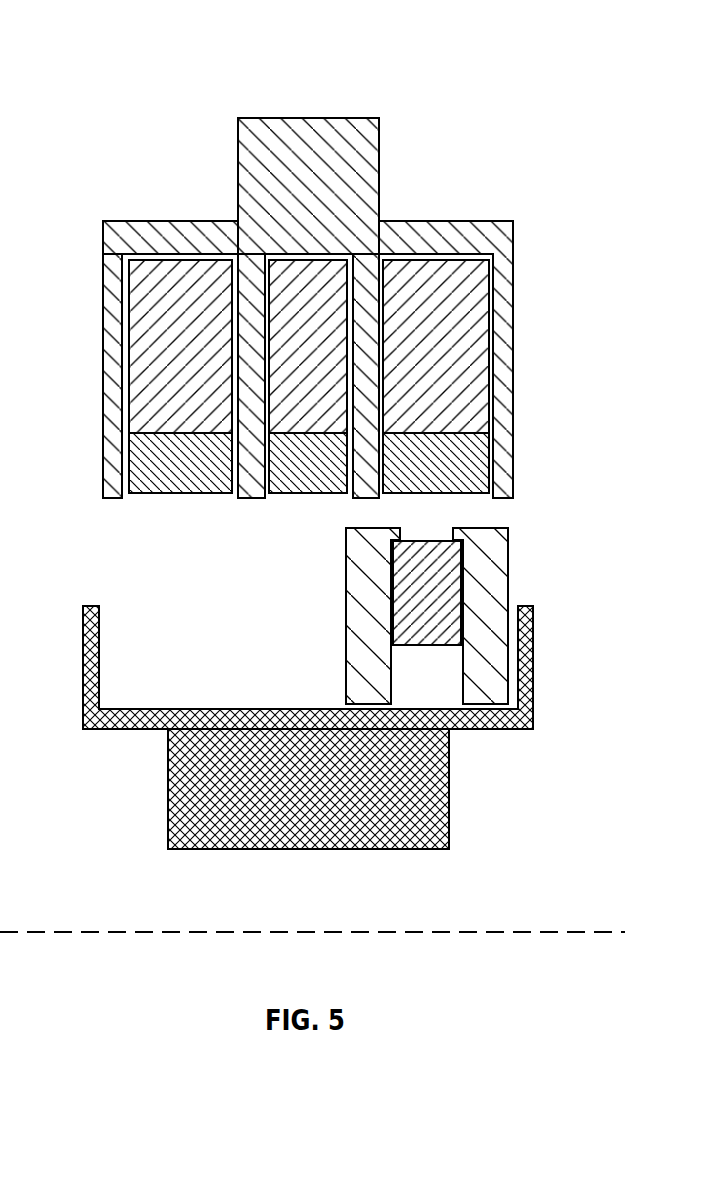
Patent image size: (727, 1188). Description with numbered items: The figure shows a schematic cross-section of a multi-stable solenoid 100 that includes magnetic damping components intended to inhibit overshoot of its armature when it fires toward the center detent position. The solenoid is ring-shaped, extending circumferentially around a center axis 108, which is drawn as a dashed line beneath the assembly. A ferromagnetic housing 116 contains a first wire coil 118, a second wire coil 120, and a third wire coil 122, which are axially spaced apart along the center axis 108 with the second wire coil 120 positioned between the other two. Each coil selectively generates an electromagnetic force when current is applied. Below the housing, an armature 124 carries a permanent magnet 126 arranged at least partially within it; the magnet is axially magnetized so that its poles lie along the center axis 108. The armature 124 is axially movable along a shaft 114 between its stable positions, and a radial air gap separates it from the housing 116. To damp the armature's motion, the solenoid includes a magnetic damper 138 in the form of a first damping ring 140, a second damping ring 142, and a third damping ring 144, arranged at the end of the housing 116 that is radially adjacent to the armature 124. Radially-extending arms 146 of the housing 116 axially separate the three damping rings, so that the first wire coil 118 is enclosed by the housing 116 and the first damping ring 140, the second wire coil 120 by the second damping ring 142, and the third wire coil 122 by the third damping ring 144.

The multi-stable solenoid 100 is at (453, 75).
The center axis 108 is at (412, 931).
The shaft 114 is at (430, 773).
The housing 116 is at (205, 225).
The first wire coil 118 is at (201, 365).
The second wire coil 120 is at (329, 365).
The third wire coil 122 is at (456, 365).
The armature 124 is at (372, 570).
The permanent magnet 126 is at (448, 603).
The magnetic damper 138 is at (127, 461).
The first damping ring 140 is at (201, 475).
The second damping ring 142 is at (329, 475).
The third damping ring 144 is at (456, 475).
The radially-extending arms 146 is at (245, 492).